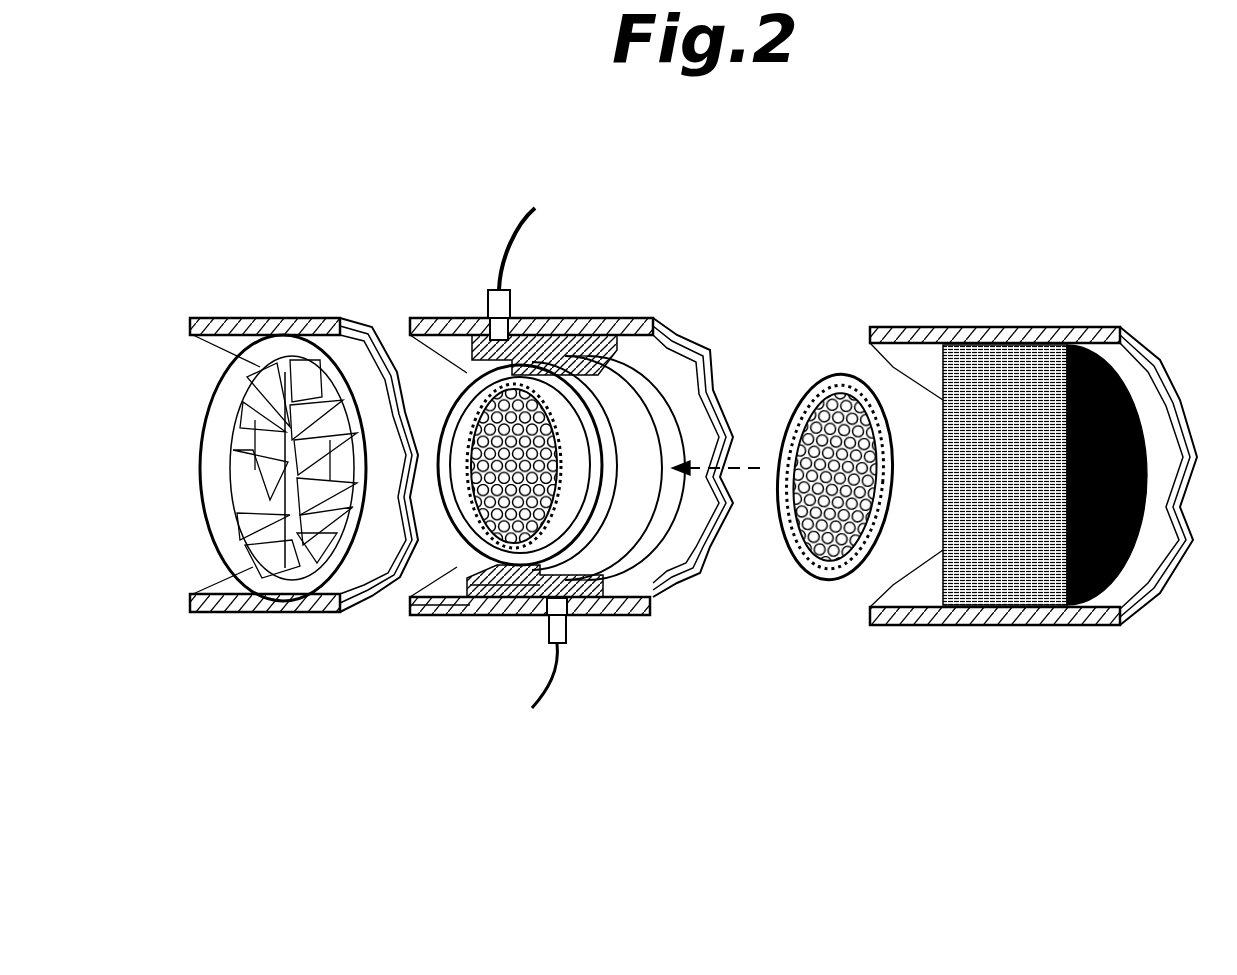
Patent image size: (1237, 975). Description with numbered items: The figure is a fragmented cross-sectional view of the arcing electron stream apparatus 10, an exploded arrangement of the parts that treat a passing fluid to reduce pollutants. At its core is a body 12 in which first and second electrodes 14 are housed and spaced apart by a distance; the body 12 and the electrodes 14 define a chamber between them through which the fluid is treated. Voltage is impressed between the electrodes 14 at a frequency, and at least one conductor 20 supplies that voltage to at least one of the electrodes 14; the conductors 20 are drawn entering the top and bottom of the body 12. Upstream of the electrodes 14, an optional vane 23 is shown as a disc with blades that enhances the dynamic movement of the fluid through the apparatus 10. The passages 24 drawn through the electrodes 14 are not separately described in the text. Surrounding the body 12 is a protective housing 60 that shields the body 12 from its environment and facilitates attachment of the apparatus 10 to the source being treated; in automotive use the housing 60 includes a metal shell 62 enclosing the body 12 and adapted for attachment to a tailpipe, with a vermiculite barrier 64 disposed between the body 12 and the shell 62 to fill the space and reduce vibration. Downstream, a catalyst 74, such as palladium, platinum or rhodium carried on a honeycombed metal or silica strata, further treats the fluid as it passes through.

The apparatus 10 is at (960, 218).
The body 12 is at (530, 357).
The electrodes 14 is at (440, 400).
The conductor 20 is at (507, 243).
The vane 23 is at (218, 380).
The flow passages / cells 24 is at (543, 447).
The protective housing 60 is at (423, 615).
The metal shell 62 is at (493, 615).
The vermiculite barrier 64 is at (449, 610).
The catalyst 74 is at (1135, 380).